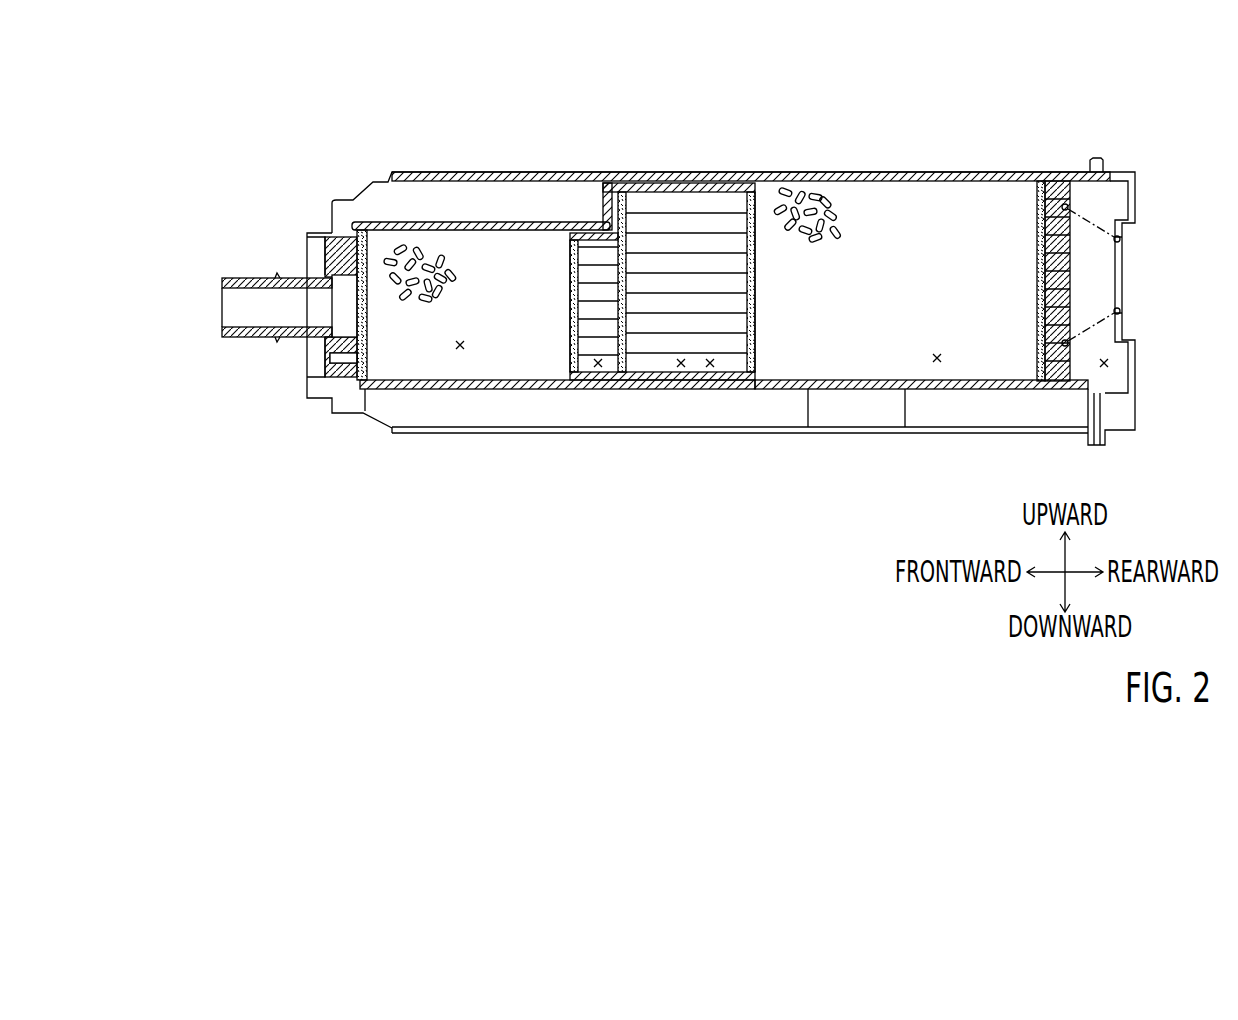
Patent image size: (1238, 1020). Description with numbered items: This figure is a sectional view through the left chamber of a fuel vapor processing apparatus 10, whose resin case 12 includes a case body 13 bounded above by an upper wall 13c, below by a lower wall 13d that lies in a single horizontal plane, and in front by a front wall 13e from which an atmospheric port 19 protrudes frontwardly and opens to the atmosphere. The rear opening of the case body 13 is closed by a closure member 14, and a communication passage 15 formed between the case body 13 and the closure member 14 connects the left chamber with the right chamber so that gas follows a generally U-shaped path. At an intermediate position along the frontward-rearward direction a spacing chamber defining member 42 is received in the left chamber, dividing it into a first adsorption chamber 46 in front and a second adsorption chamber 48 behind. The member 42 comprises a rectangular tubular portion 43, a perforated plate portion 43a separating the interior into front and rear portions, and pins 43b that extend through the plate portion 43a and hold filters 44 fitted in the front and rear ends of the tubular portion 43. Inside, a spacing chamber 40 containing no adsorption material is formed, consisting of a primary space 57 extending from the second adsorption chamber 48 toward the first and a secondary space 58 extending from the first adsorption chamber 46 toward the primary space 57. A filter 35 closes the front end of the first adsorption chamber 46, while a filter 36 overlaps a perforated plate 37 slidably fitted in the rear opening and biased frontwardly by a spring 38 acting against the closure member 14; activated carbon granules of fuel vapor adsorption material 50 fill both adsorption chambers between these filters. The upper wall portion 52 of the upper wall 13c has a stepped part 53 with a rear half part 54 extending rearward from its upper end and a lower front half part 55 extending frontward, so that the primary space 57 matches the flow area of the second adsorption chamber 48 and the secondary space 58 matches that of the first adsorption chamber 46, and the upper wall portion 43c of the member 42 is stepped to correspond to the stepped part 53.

The apparatus 10 is at (355, 160).
The case 12 is at (483, 169).
The case body 13 is at (906, 171).
The upper wall 13c is at (782, 176).
The upper wall portion 52 is at (751, 125).
The lower wall 13d is at (850, 389).
The front wall 13e is at (330, 358).
The closure member 14 is at (1137, 200).
The communication passage 15 is at (1108, 363).
The atmospheric port 19 is at (245, 279).
The filter 35 is at (363, 390).
The filter 36 is at (1038, 312).
The perforated plate 37 is at (1071, 265).
The spring 38 is at (1103, 215).
The spacing chamber 40 is at (681, 367).
The spacing chamber defining member 42 is at (719, 184).
The tubular portion 43 is at (733, 378).
The plate portion 43a is at (632, 228).
The pins 43b is at (668, 214).
The upper wall portion 43c is at (706, 186).
The filters 44 is at (572, 330).
The first adsorption chamber 46 is at (460, 349).
The second adsorption chamber 48 is at (937, 362).
The fuel vapor adsorption material 50 is at (415, 290).
The stepped part 53 is at (590, 221).
The rear half part 54 is at (946, 180).
The front half part 55 is at (527, 221).
The primary space 57 is at (710, 367).
The secondary space 58 is at (598, 367).